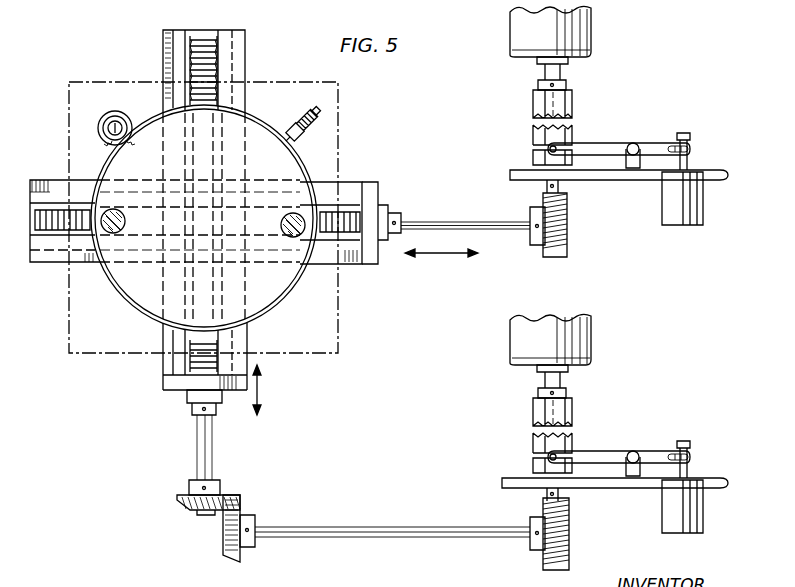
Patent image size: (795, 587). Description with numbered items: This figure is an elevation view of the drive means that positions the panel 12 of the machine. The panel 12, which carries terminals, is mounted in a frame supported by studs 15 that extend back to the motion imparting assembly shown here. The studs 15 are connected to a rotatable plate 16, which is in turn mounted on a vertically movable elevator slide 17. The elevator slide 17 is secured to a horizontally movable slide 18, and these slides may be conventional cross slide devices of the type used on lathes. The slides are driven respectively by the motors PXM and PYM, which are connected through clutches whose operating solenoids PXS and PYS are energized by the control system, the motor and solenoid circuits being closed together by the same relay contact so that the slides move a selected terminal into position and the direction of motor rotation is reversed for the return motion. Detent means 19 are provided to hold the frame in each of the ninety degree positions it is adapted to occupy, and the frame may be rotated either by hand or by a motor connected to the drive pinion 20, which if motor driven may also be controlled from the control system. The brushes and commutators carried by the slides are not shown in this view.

The panel 12 is at (340, 333).
The studs 15 is at (118, 235).
The rotatable plate 16 is at (253, 140).
The elevator slide 17 is at (246, 44).
The horizontally movable slide 18 is at (376, 186).
The detent means 19 is at (306, 132).
The drive pinion 20 is at (130, 122).
The motor PXM is at (592, 43).
The clutch operating solenoid PXS is at (704, 185).
The motor PYM is at (570, 351).
The clutch operating solenoid PYS is at (623, 505).